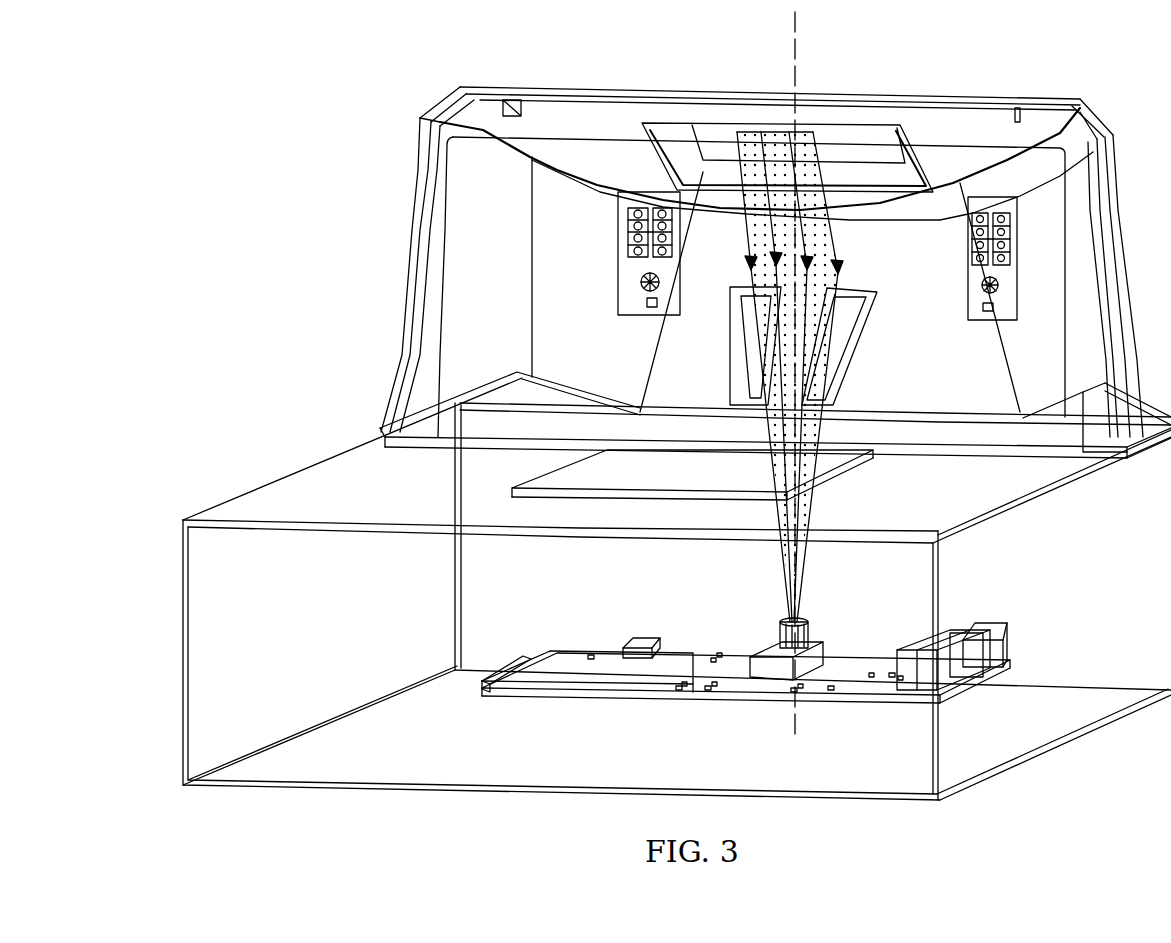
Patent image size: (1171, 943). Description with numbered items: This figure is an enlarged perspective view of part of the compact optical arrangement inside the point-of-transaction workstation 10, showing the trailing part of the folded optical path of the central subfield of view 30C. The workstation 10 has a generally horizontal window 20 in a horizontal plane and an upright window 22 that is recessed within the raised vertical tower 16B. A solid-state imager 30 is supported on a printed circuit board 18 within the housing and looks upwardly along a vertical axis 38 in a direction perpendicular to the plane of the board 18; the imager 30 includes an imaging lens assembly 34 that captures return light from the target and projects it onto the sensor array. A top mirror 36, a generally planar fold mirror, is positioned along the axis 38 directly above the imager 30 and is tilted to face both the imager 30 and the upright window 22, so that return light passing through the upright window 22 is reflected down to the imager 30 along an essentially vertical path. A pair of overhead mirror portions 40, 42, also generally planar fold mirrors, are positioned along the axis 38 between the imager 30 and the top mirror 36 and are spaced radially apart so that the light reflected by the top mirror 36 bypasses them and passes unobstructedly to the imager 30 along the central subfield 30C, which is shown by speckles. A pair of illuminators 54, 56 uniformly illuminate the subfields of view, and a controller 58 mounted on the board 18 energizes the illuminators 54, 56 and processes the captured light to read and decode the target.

The point-of-transaction workstation 10 is at (400, 88).
The vertical tower 16B is at (1097, 120).
The printed circuit board 18 is at (885, 667).
The horizontal window 20 is at (563, 471).
The upright window 22 is at (443, 281).
The solid-state imager 30 is at (756, 632).
The central subfield of view 30C is at (832, 242).
The imaging lens assembly 34 is at (810, 625).
The top mirror 36 is at (927, 163).
The vertical axis 38 is at (797, 44).
The overhead mirror portion 40 is at (876, 294).
The overhead mirror portion 42 is at (733, 355).
The illuminator 54 is at (972, 282).
The illuminator 56 is at (623, 298).
The controller 58 is at (513, 668).